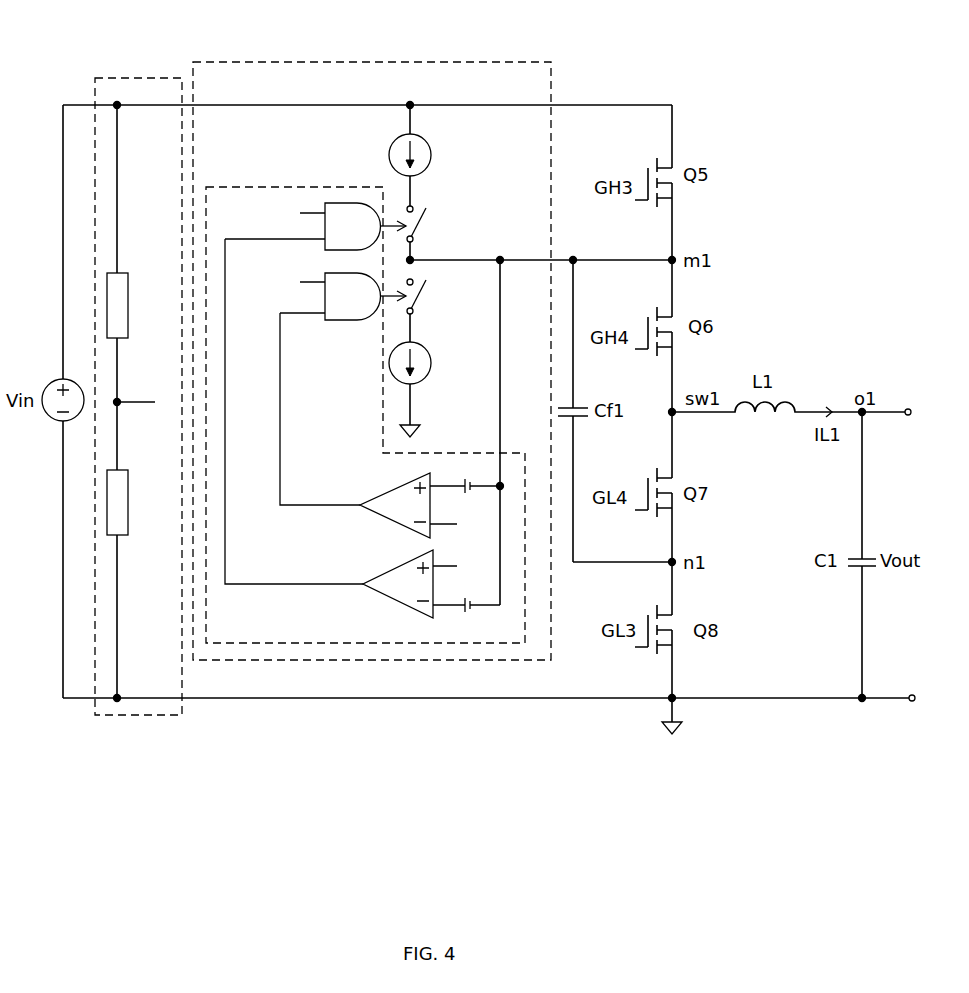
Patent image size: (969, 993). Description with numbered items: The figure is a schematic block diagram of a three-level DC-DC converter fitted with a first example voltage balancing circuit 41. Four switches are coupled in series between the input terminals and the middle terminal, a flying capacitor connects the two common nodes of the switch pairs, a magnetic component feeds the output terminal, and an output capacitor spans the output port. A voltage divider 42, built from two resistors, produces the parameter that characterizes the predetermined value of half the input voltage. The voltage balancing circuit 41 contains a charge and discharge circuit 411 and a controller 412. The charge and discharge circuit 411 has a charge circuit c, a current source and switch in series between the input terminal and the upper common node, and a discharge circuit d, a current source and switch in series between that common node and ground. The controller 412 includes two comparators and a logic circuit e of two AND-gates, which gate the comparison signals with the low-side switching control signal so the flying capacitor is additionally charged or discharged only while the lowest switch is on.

The voltage balancing circuit 41 is at (302, 62).
The voltage divider 42 is at (110, 77).
The charge and discharge circuit 411 is at (455, 270).
The controller 412 is at (365, 415).
The charge circuit c is at (442, 184).
The discharge circuit d is at (439, 337).
The logic circuit e is at (338, 337).